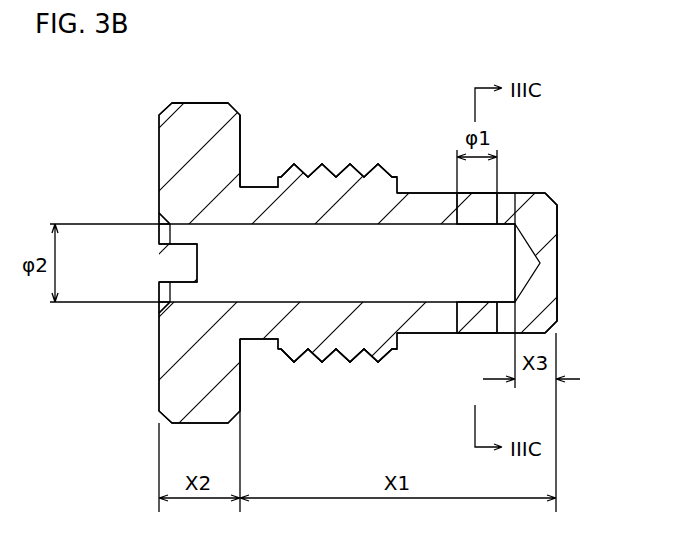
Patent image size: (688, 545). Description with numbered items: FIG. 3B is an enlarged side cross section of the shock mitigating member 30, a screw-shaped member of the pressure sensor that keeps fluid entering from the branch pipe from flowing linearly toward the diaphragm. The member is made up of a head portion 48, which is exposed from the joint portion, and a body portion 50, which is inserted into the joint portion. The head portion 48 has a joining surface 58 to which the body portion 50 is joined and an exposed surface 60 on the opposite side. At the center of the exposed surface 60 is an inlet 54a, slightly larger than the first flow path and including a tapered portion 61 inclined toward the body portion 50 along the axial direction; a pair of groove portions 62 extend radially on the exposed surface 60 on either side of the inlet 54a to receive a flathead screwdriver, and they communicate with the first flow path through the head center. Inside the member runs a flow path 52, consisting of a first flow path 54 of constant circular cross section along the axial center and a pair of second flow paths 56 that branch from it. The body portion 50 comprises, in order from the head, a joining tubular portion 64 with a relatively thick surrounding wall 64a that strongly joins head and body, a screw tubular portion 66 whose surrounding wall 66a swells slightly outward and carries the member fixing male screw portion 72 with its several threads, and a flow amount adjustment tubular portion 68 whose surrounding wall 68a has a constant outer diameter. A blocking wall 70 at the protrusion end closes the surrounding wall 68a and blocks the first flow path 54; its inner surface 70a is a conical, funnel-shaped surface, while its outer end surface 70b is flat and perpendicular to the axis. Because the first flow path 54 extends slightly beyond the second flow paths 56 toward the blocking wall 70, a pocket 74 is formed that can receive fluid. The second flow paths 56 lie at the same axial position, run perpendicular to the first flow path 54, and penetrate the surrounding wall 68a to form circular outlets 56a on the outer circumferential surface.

The shock mitigating member 30 is at (138, 122).
The head portion 48 is at (193, 103).
The body portion 50 is at (275, 98).
The flow path 52 is at (278, 249).
The first flow path 54 is at (220, 242).
The inlet 54a is at (159, 305).
The second flow paths 56 is at (478, 317).
The outlets 56a is at (472, 196).
The joining surface 58 is at (240, 392).
The exposed surface 60 is at (159, 392).
The tapered portion 61 is at (110, 286).
The groove portions 62 is at (197, 264).
The joining tubular portion 64 is at (258, 187).
The surrounding wall 64a is at (253, 317).
The screw tubular portion 66 is at (338, 165).
The surrounding wall 66a is at (331, 318).
The flow amount adjustment tubular portion 68 is at (418, 192).
The surrounding wall 68a is at (432, 313).
The blocking wall 70 is at (537, 304).
The inner surface 70a is at (523, 277).
The outer end surface 70b is at (551, 237).
The member fixing male screw portion 72 is at (340, 358).
The pocket 74 is at (503, 242).